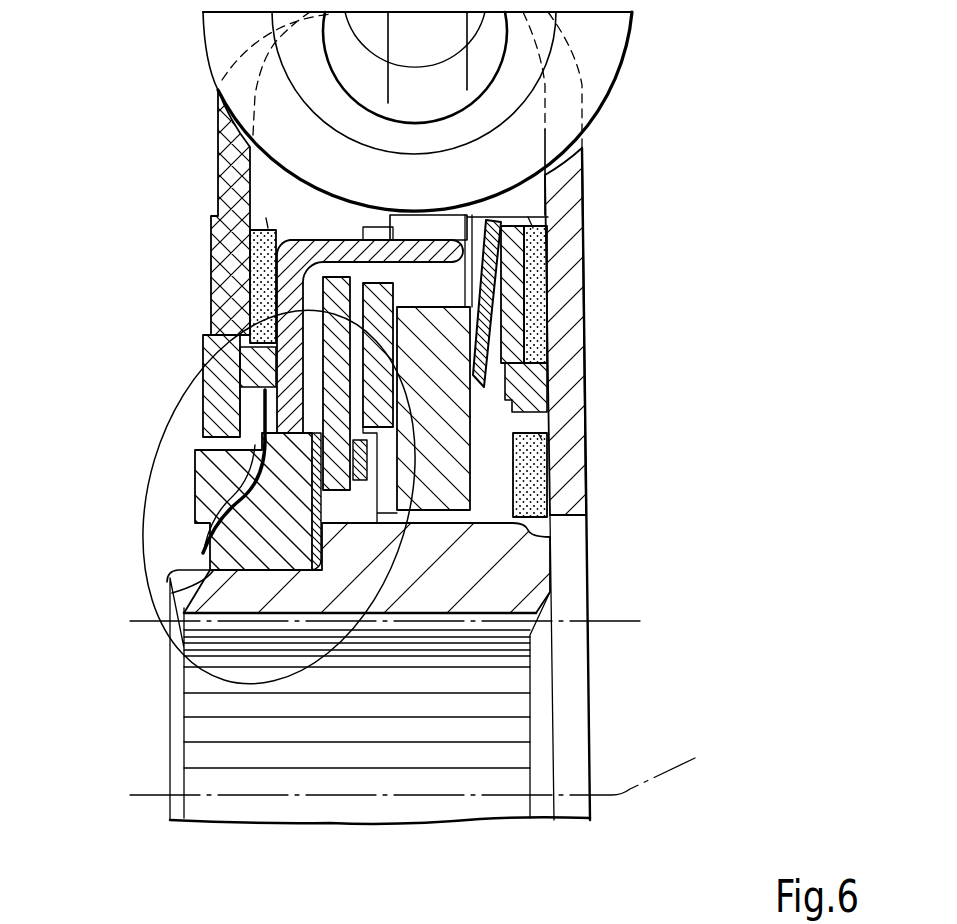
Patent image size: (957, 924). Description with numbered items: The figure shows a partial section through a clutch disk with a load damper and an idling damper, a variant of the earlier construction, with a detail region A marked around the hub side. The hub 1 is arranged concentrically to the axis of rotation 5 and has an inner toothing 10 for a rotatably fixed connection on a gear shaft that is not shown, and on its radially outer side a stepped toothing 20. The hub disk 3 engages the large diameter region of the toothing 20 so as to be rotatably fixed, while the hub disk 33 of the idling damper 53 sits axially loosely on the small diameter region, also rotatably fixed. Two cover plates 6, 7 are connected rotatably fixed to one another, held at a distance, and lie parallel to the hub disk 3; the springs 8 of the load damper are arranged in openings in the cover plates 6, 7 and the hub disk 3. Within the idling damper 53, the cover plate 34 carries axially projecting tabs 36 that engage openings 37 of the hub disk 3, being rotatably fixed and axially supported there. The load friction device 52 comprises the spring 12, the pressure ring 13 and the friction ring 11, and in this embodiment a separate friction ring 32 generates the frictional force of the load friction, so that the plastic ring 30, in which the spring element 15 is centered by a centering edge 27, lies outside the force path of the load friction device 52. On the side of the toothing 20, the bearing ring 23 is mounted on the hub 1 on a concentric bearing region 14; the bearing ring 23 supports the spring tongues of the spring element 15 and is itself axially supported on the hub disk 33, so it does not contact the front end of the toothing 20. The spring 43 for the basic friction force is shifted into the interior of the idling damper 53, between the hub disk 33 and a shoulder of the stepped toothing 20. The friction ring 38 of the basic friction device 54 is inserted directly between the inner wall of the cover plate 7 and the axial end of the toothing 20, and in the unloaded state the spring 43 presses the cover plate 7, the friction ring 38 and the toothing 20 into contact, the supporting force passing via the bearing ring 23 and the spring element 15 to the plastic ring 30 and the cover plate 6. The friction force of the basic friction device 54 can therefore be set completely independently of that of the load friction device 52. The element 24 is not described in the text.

The hub 1 is at (547, 573).
The hub disk 3 is at (455, 495).
The axis of rotation 5 is at (421, 765).
The cover plate 6 is at (222, 120).
The cover plate 7 is at (560, 172).
The springs 8 is at (593, 80).
The inner toothing 10 is at (527, 643).
The friction ring 11 is at (535, 298).
The spring 12 is at (505, 235).
The pressure ring 13 is at (525, 380).
The bearing region 14 is at (215, 585).
The spring element 15 is at (300, 533).
The toothing 20 is at (340, 505).
The bearing ring 23 is at (185, 621).
The support ring 24 is at (238, 395).
The centering edge 27 is at (292, 355).
The plastic ring 30 is at (245, 433).
The friction ring 32 is at (290, 250).
The hub disk 33 is at (328, 320).
The cover plate 34 is at (262, 290).
The tabs 36 is at (256, 230).
The openings 37 is at (515, 255).
The friction ring 38 is at (530, 470).
The spring 43 is at (357, 467).
The load friction device 52 is at (530, 216).
The idling damper 53 is at (266, 220).
The basic friction device 54 is at (538, 433).
The detail region A is at (200, 640).